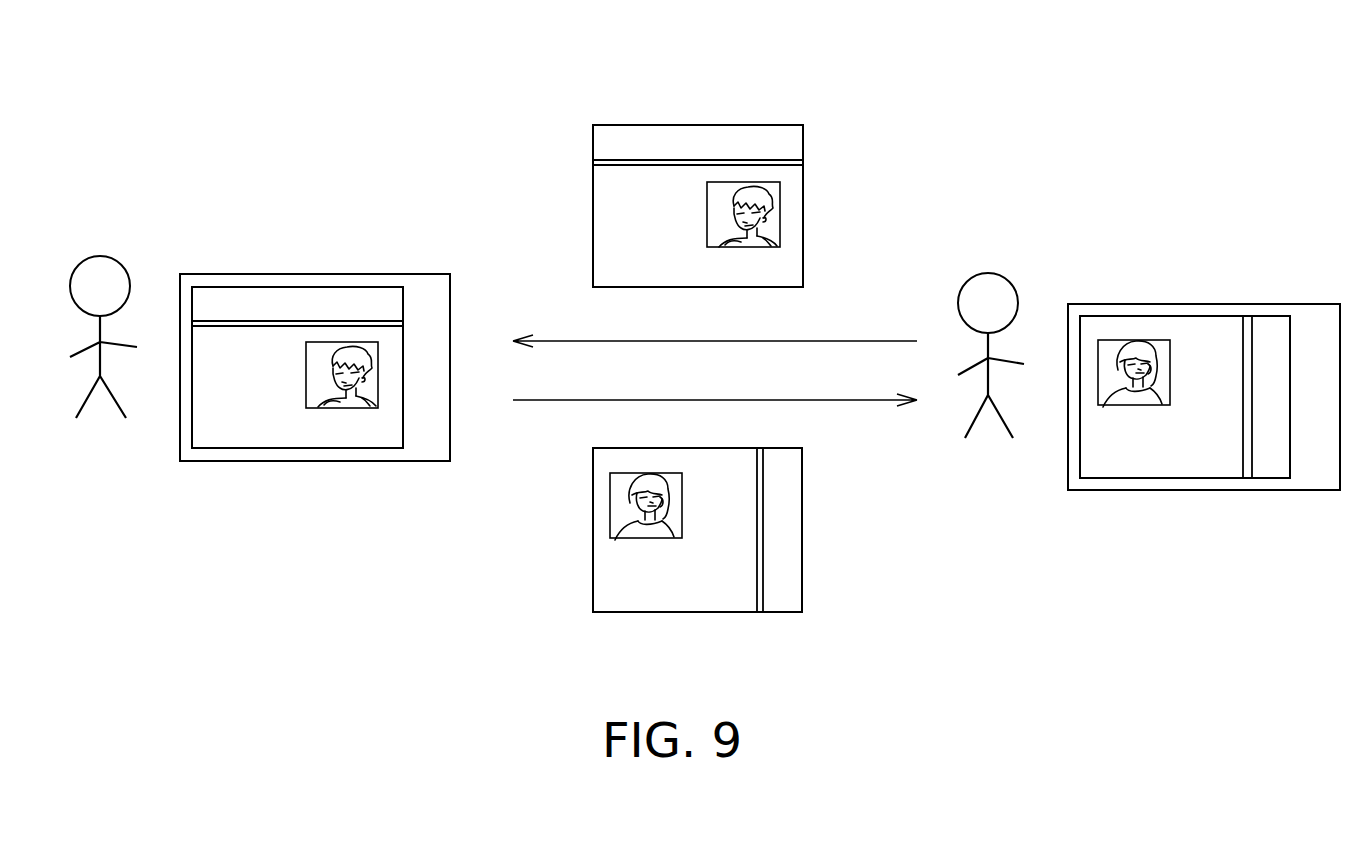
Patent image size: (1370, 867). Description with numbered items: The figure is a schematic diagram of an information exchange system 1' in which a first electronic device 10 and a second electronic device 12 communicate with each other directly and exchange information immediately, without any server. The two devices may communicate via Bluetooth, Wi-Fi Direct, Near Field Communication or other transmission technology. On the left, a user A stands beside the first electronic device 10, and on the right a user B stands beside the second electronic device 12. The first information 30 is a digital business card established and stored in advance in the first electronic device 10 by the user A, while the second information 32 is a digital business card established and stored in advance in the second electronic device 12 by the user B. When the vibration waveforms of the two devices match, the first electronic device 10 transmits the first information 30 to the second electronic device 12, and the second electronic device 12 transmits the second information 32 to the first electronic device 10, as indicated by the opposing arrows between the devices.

The information exchange system 1' is at (1157, 49).
The first electronic device 10 is at (310, 274).
The second electronic device 12 is at (1197, 304).
The first information 30 is at (803, 512).
The second information 32 is at (804, 190).
The user A is at (120, 266).
The user B is at (1010, 281).